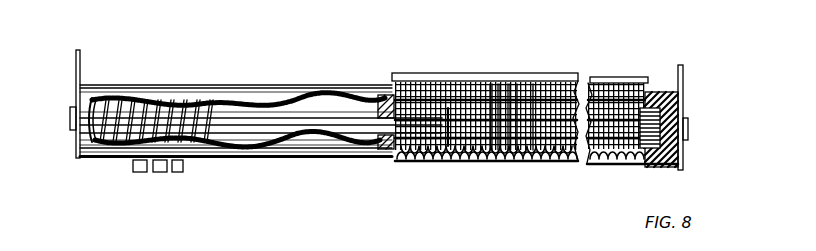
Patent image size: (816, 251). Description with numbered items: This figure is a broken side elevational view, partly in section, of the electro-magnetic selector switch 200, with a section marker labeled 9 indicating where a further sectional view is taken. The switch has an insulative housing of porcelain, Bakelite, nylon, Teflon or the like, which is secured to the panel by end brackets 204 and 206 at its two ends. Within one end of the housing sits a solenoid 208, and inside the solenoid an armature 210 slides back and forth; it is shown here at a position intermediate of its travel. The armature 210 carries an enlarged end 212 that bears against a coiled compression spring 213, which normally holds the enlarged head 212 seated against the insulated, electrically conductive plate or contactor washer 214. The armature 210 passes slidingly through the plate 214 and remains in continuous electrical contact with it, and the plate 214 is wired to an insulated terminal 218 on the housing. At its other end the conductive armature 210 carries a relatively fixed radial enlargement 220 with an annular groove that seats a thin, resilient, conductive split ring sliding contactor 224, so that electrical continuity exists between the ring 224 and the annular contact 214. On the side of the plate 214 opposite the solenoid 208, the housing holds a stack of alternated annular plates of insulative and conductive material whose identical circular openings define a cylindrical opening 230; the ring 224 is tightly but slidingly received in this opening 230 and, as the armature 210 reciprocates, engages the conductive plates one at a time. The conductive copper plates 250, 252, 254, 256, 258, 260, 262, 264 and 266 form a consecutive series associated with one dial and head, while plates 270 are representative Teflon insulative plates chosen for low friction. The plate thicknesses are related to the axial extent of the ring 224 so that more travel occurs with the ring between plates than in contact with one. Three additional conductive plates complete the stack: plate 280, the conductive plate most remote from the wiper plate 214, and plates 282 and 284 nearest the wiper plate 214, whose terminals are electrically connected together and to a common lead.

The section line for FIG. 9 is at (434, 118).
The electro-magnetic selector switch 200 is at (379, 86).
The end bracket 204 is at (75, 70).
The end bracket 206 is at (685, 78).
The solenoid 208 is at (240, 105).
The armature 210 is at (345, 125).
The enlarged end 212 is at (202, 147).
The coiled compression spring 213 is at (182, 100).
The contactor washer 214 is at (383, 163).
The insulated terminal 218 is at (135, 168).
The radial enlargement 220 is at (477, 87).
The split ring sliding contactor 224 is at (463, 90).
The cylindrical opening 230 is at (613, 167).
The conductive annular plate 250 is at (523, 163).
The conductive annular plate 252 is at (533, 87).
The conductive annular plate 254 is at (510, 165).
The conductive annular plate 256 is at (517, 87).
The conductive annular plate 258 is at (508, 87).
The conductive annular plate 260 is at (498, 163).
The conductive annular plate 262 is at (490, 87).
The conductive annular plate 264 is at (491, 163).
The conductive annular plate 266 is at (500, 87).
The insulative plates 270 is at (603, 88).
The conductive plate 280 is at (643, 167).
The conductive plate 282 is at (398, 160).
The conductive plate 284 is at (417, 162).